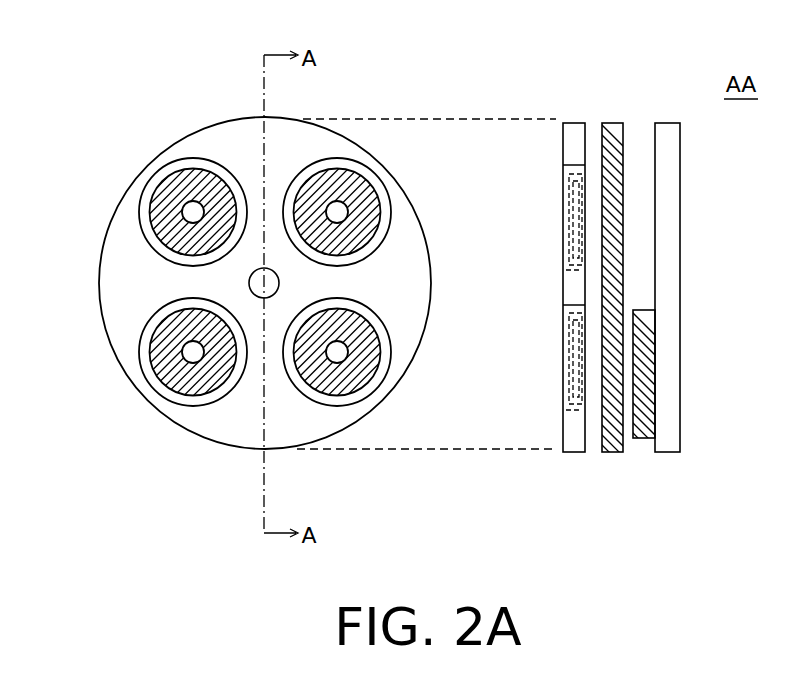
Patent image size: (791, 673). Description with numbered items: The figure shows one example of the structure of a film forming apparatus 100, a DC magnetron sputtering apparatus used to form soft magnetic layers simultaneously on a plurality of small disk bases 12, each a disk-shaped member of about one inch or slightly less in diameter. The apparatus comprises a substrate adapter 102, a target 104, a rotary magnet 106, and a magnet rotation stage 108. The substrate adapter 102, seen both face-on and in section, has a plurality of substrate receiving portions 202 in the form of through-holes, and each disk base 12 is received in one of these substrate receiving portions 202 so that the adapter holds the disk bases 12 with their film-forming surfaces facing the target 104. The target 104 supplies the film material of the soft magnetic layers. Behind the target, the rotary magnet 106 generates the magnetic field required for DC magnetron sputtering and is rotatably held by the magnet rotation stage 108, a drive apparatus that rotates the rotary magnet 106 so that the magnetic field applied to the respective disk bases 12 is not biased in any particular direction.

The disk base 12 is at (172, 186).
The film forming apparatus 100 is at (551, 52).
The substrate adapter 102 is at (227, 134).
The target 104 is at (618, 128).
The rotary magnet 106 is at (643, 440).
The magnet rotation stage 108 is at (668, 412).
The substrate receiving portion 202 is at (141, 225).